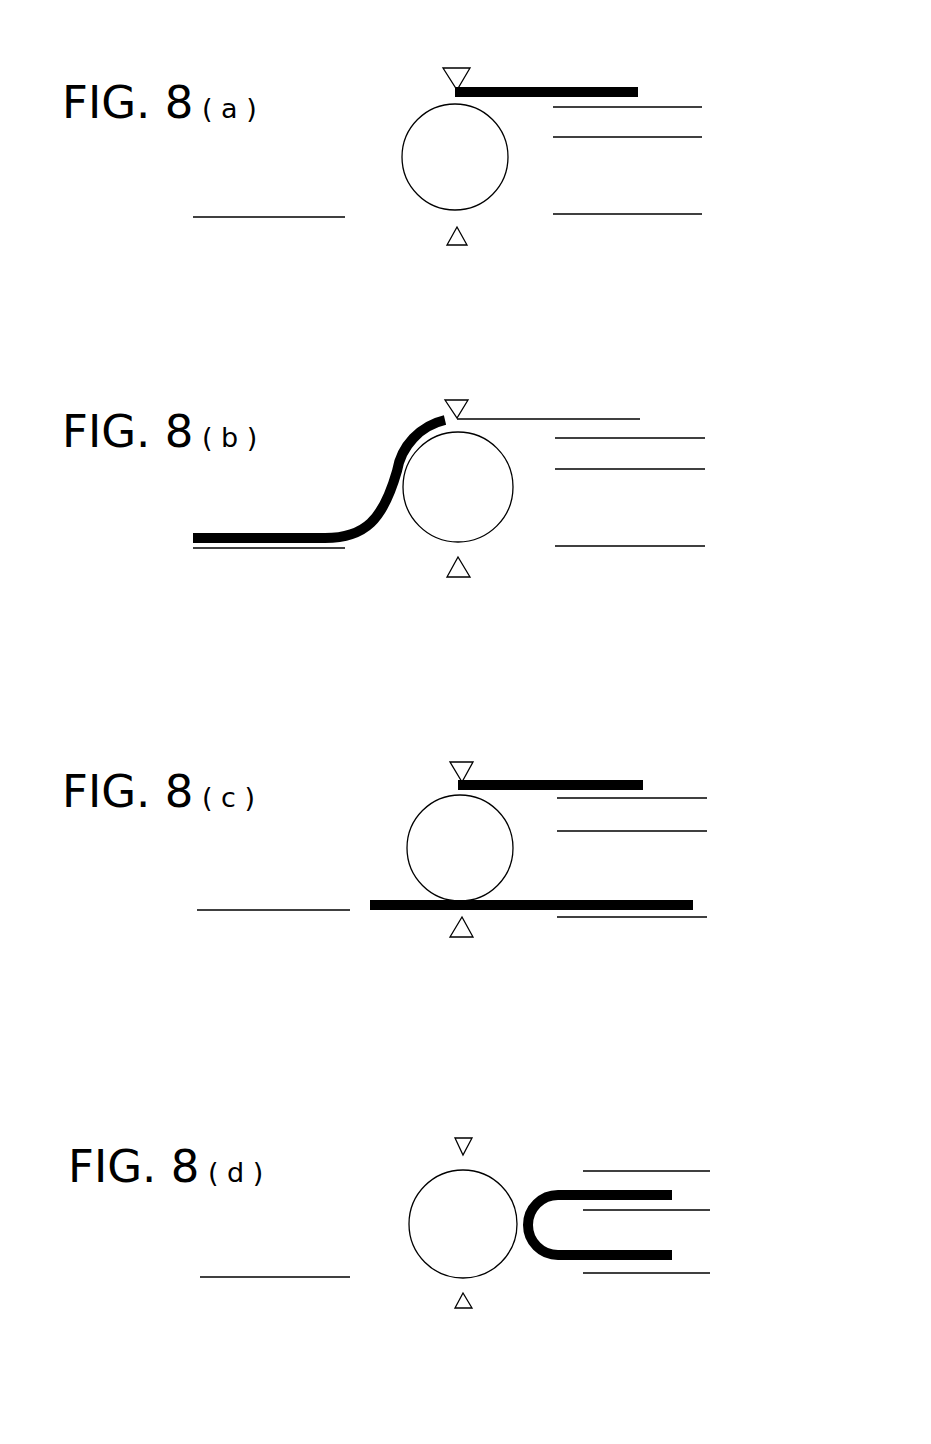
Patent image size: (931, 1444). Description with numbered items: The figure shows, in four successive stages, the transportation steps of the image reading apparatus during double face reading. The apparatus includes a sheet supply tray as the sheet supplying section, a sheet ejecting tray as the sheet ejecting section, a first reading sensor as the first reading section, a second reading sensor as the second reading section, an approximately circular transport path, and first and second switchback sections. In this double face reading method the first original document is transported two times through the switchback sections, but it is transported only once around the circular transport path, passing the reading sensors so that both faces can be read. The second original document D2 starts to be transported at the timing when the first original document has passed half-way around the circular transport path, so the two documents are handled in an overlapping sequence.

The second original document D2 is at (560, 780).